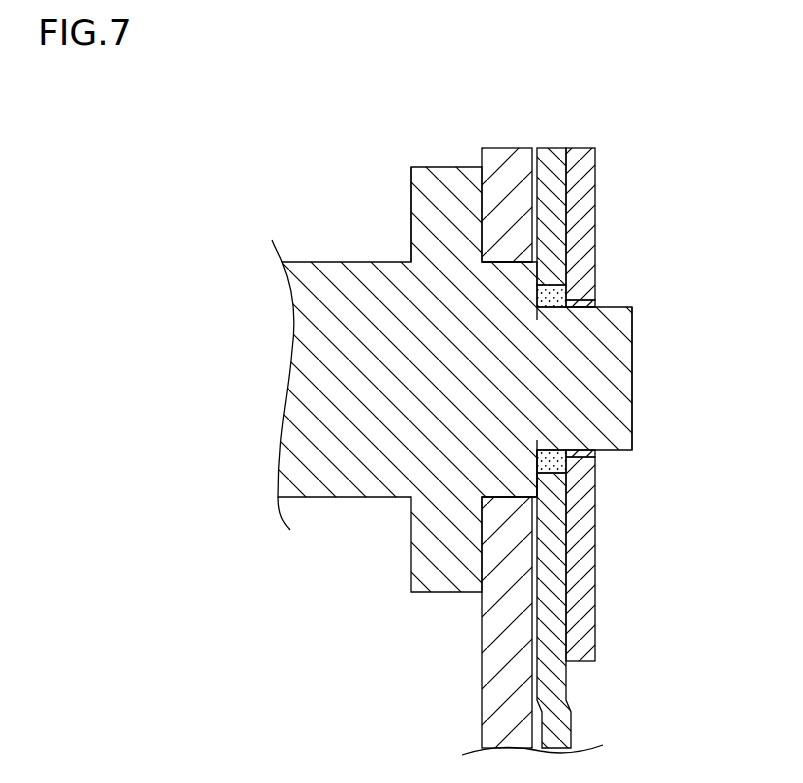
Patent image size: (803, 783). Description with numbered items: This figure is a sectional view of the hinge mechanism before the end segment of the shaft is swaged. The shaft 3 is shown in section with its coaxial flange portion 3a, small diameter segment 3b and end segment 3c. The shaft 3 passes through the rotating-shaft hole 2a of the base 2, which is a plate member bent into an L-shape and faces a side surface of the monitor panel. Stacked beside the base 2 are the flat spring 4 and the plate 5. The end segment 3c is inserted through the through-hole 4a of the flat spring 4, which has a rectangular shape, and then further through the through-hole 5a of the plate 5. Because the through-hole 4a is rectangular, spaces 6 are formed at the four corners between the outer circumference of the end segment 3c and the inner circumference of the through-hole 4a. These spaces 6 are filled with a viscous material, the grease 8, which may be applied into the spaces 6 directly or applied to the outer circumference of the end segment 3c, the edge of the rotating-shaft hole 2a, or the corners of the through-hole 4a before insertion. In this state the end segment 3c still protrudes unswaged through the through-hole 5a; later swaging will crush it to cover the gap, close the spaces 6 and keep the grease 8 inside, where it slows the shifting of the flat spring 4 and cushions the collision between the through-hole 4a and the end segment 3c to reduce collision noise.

The base 2 is at (505, 148).
The rotating-shaft hole 2a is at (495, 266).
The shaft 3 is at (356, 497).
The flange portion 3a is at (411, 194).
The small diameter segment 3b is at (518, 466).
The end segment 3c is at (633, 400).
The flat spring 4 is at (549, 148).
The through-hole 4a is at (555, 292).
The plate 5 is at (596, 178).
The through-hole 5a is at (578, 312).
The spaces 6 is at (553, 312).
The grease 8 is at (565, 302).